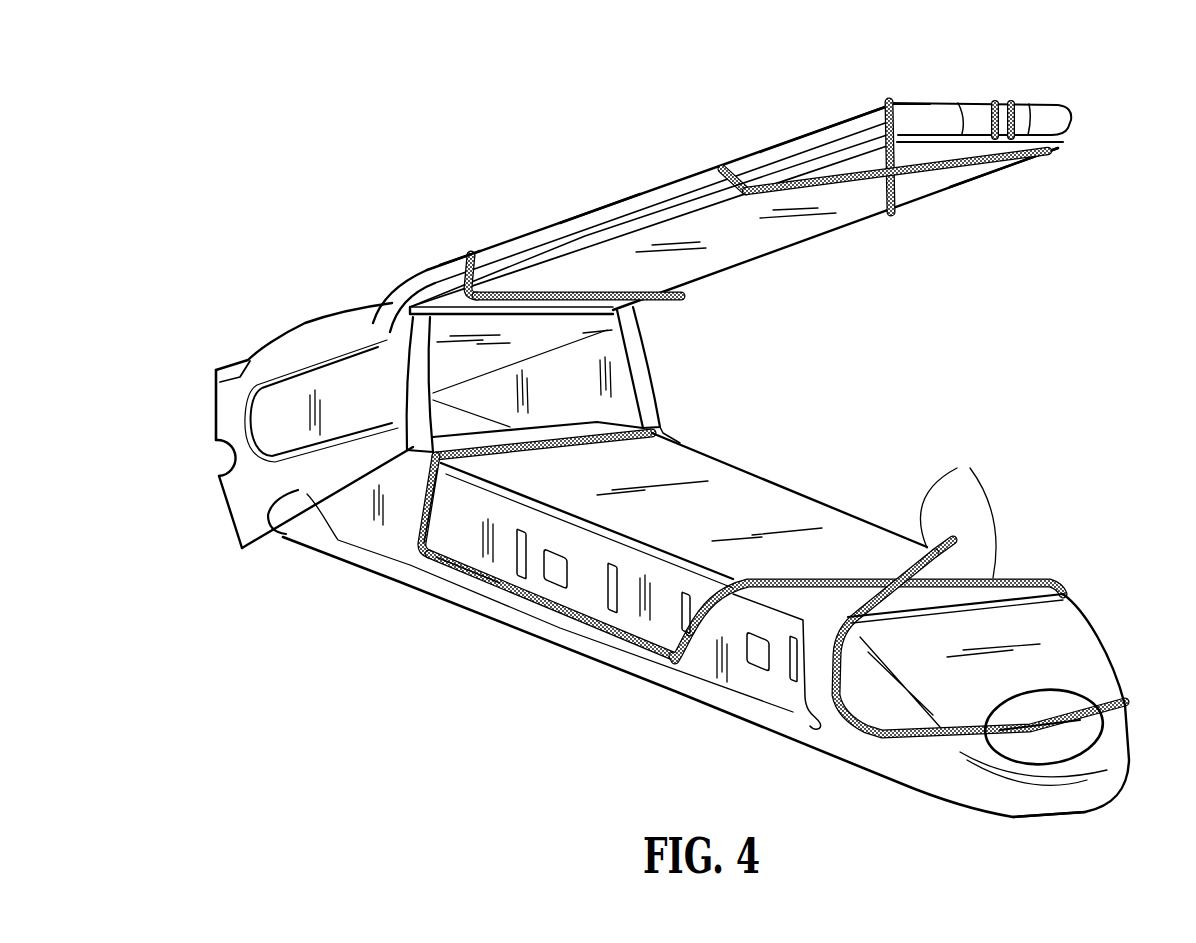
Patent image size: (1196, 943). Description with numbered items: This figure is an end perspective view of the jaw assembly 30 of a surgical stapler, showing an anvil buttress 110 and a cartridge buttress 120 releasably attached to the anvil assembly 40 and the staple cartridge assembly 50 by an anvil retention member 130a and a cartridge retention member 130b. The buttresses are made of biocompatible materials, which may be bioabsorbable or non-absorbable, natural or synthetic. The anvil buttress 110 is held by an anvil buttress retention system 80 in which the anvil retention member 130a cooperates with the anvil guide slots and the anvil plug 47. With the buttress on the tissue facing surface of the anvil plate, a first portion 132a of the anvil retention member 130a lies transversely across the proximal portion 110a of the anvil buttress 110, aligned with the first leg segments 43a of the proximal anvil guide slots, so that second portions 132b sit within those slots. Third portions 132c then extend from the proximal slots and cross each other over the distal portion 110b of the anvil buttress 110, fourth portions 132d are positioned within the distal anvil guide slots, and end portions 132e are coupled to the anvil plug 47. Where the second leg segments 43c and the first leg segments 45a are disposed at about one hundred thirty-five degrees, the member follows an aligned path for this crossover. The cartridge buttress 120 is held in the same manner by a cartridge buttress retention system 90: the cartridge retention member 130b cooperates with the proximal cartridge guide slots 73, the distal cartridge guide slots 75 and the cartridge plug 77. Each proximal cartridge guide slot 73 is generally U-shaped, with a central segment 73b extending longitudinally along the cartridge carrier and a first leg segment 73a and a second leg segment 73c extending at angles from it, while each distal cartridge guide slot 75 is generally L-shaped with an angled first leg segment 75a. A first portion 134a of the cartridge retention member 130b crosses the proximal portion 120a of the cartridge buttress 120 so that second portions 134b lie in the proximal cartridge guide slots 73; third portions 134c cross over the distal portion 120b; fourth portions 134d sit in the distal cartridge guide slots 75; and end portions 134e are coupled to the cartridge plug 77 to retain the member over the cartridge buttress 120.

The jaw assembly 30 is at (327, 214).
The anvil assembly 40 is at (613, 192).
The first leg segment 43a is at (450, 270).
The second leg segment 43c is at (707, 176).
The first leg segment 45a is at (873, 127).
The anvil plug 47 is at (1031, 108).
The staple cartridge assembly 50 is at (581, 670).
The proximal cartridge guide slots 73 is at (535, 620).
The first leg segment 73a is at (410, 517).
The central segment 73b is at (446, 577).
The second leg segment 73c is at (683, 666).
The distal cartridge guide slots 75 is at (869, 740).
The first leg segment 75a is at (821, 672).
The cartridge plug 77 is at (1063, 710).
The anvil buttress retention system 80 is at (904, 56).
The cartridge buttress retention system 90 is at (1042, 552).
The anvil buttress 110 is at (767, 247).
The proximal portion 110a is at (550, 291).
The distal portion 110b is at (1023, 156).
The cartridge buttress 120 is at (811, 515).
The proximal portion 120a is at (652, 465).
The distal portion 120b is at (1007, 592).
The anvil retention member 130a is at (459, 249).
The cartridge retention member 130b is at (402, 561).
The first portion 132a is at (520, 291).
The second portions 132b is at (471, 254).
The third portions 132c is at (975, 162).
The fourth portions 132d is at (888, 102).
The end portions 132e is at (1011, 104).
The first portion 134a is at (592, 436).
The second portions 134b is at (493, 590).
The third portions 134c is at (958, 507).
The fourth portions 134d is at (827, 671).
The end portions 134e is at (1080, 720).